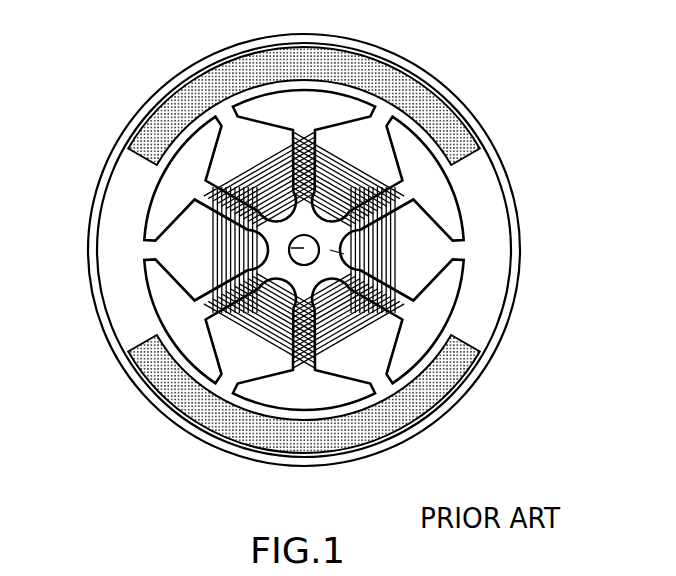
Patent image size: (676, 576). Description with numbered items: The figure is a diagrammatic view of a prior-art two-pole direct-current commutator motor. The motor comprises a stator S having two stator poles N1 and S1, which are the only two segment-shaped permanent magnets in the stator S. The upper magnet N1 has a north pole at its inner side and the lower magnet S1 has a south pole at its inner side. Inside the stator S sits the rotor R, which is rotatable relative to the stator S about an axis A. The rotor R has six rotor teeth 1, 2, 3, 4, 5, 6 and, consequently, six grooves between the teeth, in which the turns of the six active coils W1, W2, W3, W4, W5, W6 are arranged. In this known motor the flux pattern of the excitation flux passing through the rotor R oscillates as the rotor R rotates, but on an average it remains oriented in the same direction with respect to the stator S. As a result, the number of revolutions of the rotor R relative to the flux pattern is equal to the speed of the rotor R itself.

The rotor tooth 1 is at (450, 205).
The rotor tooth 2 is at (308, 92).
The rotor tooth 3 is at (152, 224).
The rotor tooth 4 is at (163, 307).
The rotor tooth 5 is at (340, 400).
The rotor tooth 6 is at (440, 317).
The active coil W1 is at (350, 173).
The active coil W2 is at (263, 170).
The active coil W3 is at (214, 258).
The active coil W4 is at (250, 330).
The active coil W5 is at (358, 328).
The active coil W6 is at (392, 247).
The stator pole N1 is at (395, 82).
The stator pole S1 is at (427, 403).
The axis A is at (235, 240).
The rotor R is at (392, 258).
The stator S is at (483, 302).